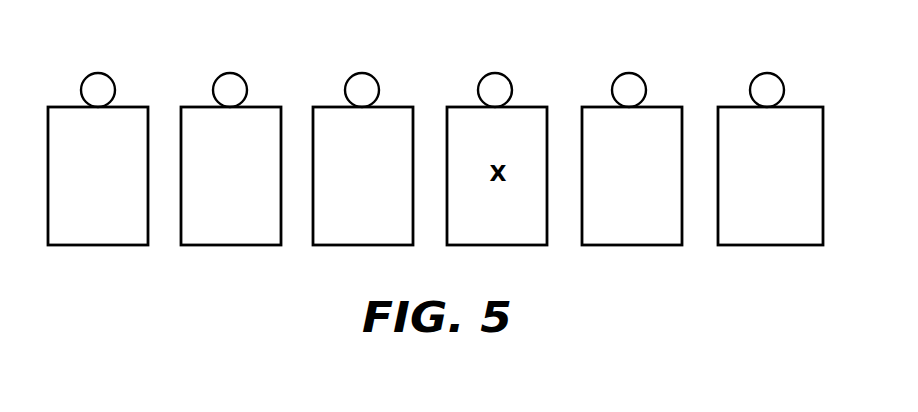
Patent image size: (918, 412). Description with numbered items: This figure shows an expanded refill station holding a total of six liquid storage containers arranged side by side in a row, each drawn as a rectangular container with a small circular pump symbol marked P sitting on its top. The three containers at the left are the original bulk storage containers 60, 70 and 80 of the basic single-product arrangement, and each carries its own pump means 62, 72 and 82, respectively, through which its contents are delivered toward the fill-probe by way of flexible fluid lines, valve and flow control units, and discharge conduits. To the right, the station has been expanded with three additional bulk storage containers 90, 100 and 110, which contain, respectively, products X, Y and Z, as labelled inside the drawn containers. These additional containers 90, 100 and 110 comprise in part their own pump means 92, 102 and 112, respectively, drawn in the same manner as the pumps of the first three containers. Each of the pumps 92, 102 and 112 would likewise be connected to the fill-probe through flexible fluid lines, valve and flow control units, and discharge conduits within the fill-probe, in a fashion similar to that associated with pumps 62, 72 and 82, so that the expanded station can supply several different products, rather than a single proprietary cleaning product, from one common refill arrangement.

The bulk storage container 60 is at (58, 103).
The pump means 62 is at (110, 74).
The bulk storage container 70 is at (192, 103).
The pump means 72 is at (242, 74).
The bulk storage container 80 is at (326, 103).
The pump means 82 is at (378, 73).
The bulk storage container 90 is at (461, 103).
The pump means 92 is at (507, 73).
The bulk storage container 100 is at (594, 103).
The pump means 102 is at (637, 75).
The bulk storage container 110 is at (730, 103).
The pump means 112 is at (777, 76).